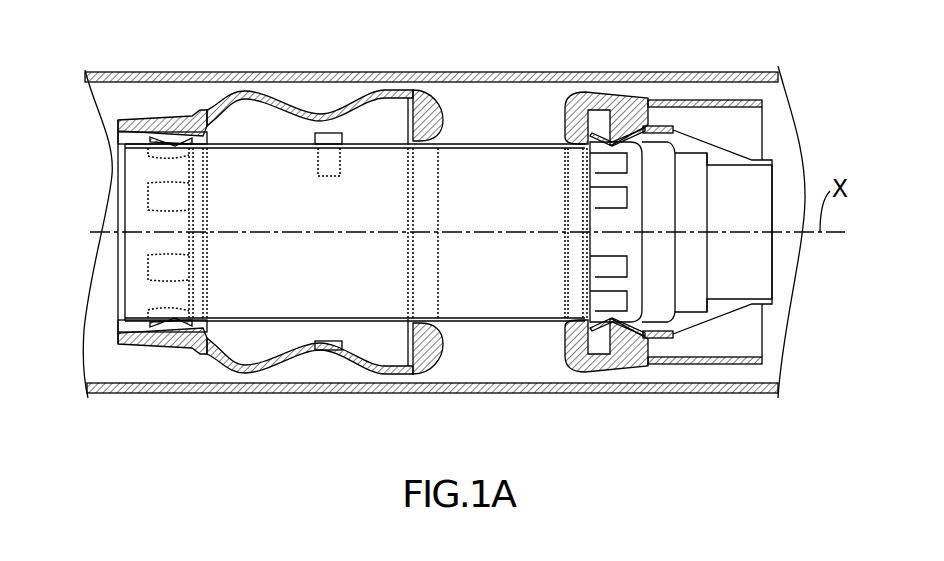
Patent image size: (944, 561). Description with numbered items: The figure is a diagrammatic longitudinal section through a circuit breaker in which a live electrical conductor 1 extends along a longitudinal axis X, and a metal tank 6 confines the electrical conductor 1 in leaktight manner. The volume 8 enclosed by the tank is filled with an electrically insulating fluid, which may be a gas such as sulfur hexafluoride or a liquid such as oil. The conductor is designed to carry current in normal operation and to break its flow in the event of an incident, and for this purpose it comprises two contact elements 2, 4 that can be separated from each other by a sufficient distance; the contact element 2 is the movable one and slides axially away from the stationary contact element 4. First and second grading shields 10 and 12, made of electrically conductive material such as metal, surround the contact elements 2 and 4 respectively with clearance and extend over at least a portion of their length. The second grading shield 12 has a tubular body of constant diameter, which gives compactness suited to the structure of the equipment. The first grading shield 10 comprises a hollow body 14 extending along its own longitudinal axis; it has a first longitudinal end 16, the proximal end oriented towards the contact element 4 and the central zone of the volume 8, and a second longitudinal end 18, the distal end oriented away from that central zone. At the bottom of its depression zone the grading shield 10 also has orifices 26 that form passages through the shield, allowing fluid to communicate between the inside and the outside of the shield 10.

The live electrical conductor 1 is at (532, 348).
The contact element 2 is at (470, 324).
The contact element 4 is at (681, 325).
The metal tank 6 is at (610, 392).
The volume 8 is at (512, 97).
The first grading shield 10 is at (357, 367).
The second grading shield 12 is at (661, 373).
The hollow body 14 is at (236, 96).
The first longitudinal end 16 is at (437, 102).
The second longitudinal end 18 is at (160, 117).
The orifice 26 is at (330, 133).